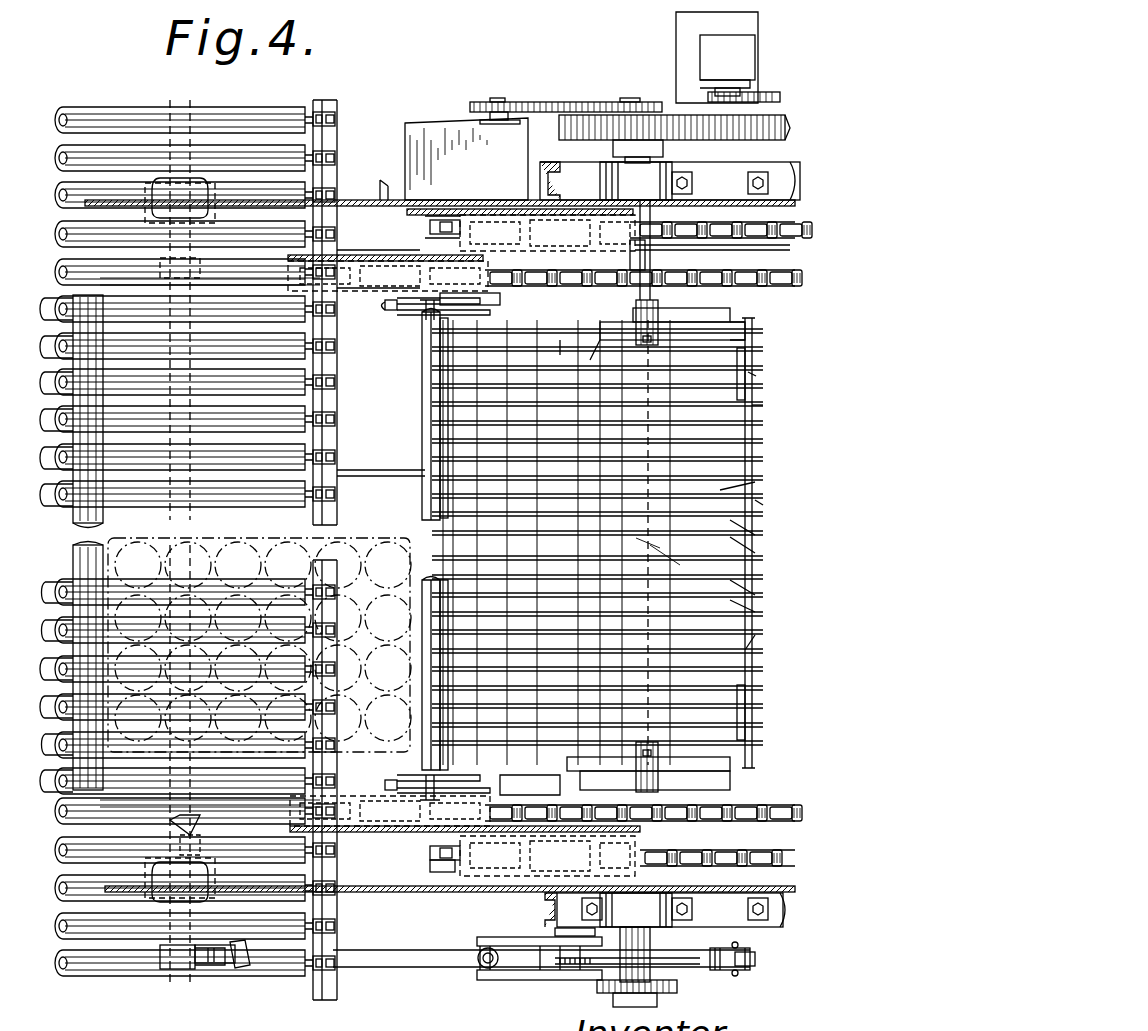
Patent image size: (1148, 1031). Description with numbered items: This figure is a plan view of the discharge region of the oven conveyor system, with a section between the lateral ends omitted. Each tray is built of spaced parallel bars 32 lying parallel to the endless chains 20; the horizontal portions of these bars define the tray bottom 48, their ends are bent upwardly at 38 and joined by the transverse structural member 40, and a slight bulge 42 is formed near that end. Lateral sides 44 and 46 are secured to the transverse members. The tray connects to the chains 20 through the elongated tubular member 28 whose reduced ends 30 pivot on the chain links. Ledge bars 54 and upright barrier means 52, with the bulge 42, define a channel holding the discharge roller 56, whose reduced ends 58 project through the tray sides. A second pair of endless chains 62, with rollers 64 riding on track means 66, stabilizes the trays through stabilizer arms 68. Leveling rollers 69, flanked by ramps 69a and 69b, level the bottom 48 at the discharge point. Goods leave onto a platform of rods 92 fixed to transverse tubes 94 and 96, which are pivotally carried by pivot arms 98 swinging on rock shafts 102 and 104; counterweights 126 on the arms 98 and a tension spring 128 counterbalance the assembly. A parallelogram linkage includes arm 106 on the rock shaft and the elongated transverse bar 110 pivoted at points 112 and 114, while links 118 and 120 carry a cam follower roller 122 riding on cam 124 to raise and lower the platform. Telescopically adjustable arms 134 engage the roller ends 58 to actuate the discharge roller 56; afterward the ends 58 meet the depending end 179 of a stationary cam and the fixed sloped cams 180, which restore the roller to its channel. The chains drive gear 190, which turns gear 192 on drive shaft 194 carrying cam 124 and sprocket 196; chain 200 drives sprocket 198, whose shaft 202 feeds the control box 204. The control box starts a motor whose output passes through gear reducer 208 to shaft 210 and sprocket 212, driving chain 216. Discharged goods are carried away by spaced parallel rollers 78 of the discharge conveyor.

The spaced parallel rollers 78 is at (155, 148).
The pivot arms 98 is at (128, 795).
The counterweights 126 is at (330, 206).
The fixed sloped cams 180 is at (420, 810).
The depending end of stationary cam means 179 is at (392, 835).
The reduced ends of discharge roller 58 is at (425, 792).
The discharge roller 56 is at (420, 775).
The telescopically adjustable arms 134 is at (460, 772).
The parallel bars or rods of platform 92 is at (352, 470).
The transverse structural tube 94 is at (90, 440).
The rock shaft 104 is at (580, 400).
The transverse structural tube 96 is at (495, 468).
The drive shaft 194 is at (663, 148).
The control box 204 is at (420, 125).
The sprocket 198 is at (480, 102).
The chain 200 is at (546, 102).
The sprocket 196 is at (613, 102).
The shaft 202 is at (505, 116).
The gear 192 is at (675, 115).
The gear reducer 208 is at (705, 52).
The sprocket 212 is at (715, 92).
The shaft 210 is at (740, 92).
The chain 216 is at (765, 92).
The gear 190 is at (770, 118).
The second pair of endless chains 62 is at (795, 200).
The rollers 64 is at (765, 225).
The stabilizer arms 68 is at (715, 247).
The reduced ends of tubular member 30 is at (520, 290).
The leveling rollers 69 is at (655, 312).
The ramp 69b is at (590, 328).
The ramp 69a is at (722, 325).
The lateral side of tray 44 is at (730, 330).
The endless chains 20 is at (760, 300).
The bulge 42 is at (760, 390).
The ledge bars 54 is at (745, 385).
The transverse structural member 40 is at (752, 410).
The tray bottom 48 is at (730, 494).
The upright barrier means 52 is at (758, 514).
The spaced parallel bars 32 is at (752, 550).
The upwardly bent end of bars 38 is at (748, 650).
The lateral side of tray 46 is at (755, 770).
The elongated tubular member 28 is at (525, 780).
The track means 66 is at (440, 875).
The cam 124 is at (590, 948).
The rock shaft 102 is at (190, 838).
The arm 106 is at (182, 970).
The pivot point 112 is at (210, 965).
The elongated transverse bar 110 is at (400, 962).
The tension spring 128 is at (515, 962).
The pivot point 114 is at (565, 982).
The link 118 is at (690, 958).
The link 120 is at (740, 946).
The cam follower roller 122 is at (735, 968).